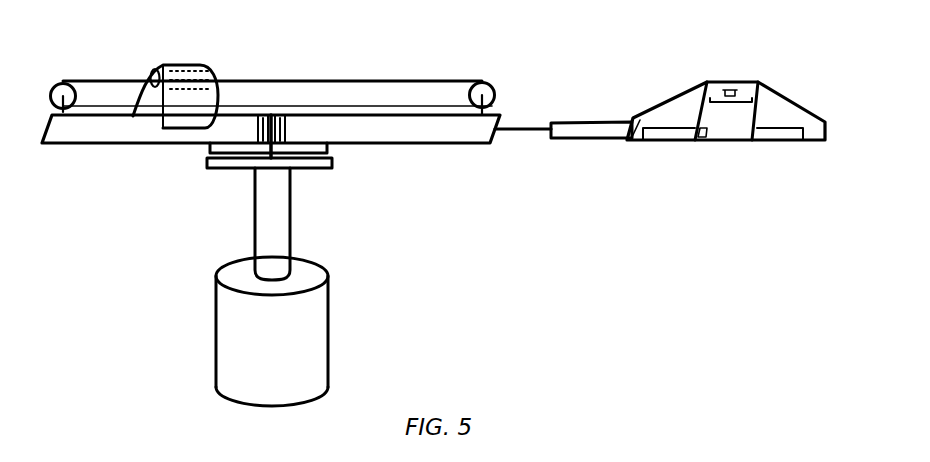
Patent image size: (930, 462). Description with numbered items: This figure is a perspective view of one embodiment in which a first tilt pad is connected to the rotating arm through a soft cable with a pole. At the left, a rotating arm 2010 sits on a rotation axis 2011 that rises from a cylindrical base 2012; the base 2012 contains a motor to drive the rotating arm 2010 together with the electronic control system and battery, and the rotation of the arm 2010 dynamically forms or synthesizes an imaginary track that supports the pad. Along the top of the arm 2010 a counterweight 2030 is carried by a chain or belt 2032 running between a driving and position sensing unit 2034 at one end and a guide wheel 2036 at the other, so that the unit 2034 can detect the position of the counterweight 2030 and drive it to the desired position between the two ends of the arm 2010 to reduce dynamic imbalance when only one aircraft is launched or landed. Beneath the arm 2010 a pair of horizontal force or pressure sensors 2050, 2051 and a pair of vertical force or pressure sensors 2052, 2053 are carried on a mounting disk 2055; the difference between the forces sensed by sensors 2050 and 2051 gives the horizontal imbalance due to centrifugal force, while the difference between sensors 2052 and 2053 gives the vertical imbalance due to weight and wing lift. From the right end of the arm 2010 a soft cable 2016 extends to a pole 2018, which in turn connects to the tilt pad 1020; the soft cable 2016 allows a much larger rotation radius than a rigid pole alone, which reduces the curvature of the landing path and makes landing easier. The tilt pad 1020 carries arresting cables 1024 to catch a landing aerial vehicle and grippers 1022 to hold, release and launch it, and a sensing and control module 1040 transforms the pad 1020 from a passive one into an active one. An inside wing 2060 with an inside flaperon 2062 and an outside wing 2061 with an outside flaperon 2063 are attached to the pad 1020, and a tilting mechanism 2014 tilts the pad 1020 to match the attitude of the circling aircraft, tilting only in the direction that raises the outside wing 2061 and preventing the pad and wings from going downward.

The rotating arm 2010 is at (362, 144).
The rotation axis 2011 is at (291, 228).
The base 2012 is at (330, 355).
The tilting mechanism 2014 is at (628, 143).
The soft cable 2016 is at (523, 133).
The pole 2018 is at (582, 135).
The counterweight 2030 is at (173, 63).
The chain (or belt) 2032 is at (423, 80).
The driving and position sensing unit 2034 is at (62, 83).
The guide wheel 2036 is at (480, 82).
The horizontal force sensor 2050 is at (262, 115).
The horizontal force sensor 2051 is at (281, 115).
The vertical force sensor 2052 is at (210, 148).
The vertical force sensor 2053 is at (327, 148).
The mounting disk 2055 is at (203, 163).
The inside wing 2060 is at (678, 112).
The outside wing 2061 is at (782, 113).
The inside flaperon 2062 is at (670, 133).
The outside flaperon 2063 is at (777, 137).
The tilt pad 1020 is at (732, 130).
The gripper 1022 is at (730, 83).
The arresting cable 1024 is at (748, 100).
The sensing and control module 1040 is at (708, 140).